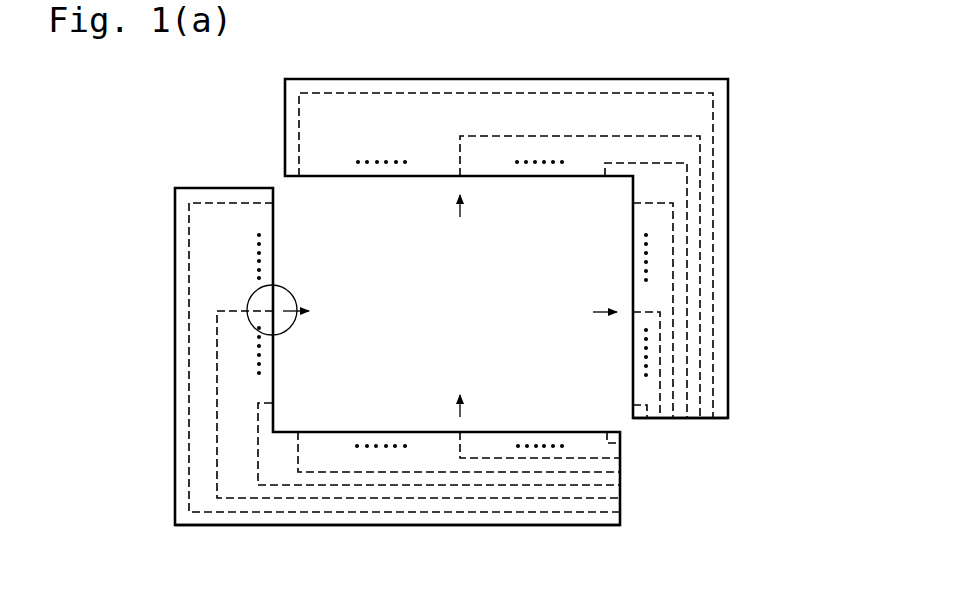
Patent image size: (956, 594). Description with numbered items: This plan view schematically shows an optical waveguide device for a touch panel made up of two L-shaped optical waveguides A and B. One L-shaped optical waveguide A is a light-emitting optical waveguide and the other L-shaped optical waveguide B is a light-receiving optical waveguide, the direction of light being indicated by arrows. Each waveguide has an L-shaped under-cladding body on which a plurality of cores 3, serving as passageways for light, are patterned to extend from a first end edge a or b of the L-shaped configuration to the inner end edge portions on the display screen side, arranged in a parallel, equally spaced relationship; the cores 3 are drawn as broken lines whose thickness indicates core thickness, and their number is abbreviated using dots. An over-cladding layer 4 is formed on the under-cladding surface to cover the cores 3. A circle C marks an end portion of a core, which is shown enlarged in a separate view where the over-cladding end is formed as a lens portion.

The L-shaped optical waveguide A is at (222, 185).
The L-shaped optical waveguide B is at (284, 132).
The circle C is at (250, 296).
The cores 3 is at (662, 162).
The over-cladding layer 4 is at (720, 187).
The first end edge a is at (620, 488).
The first end edge b is at (693, 419).